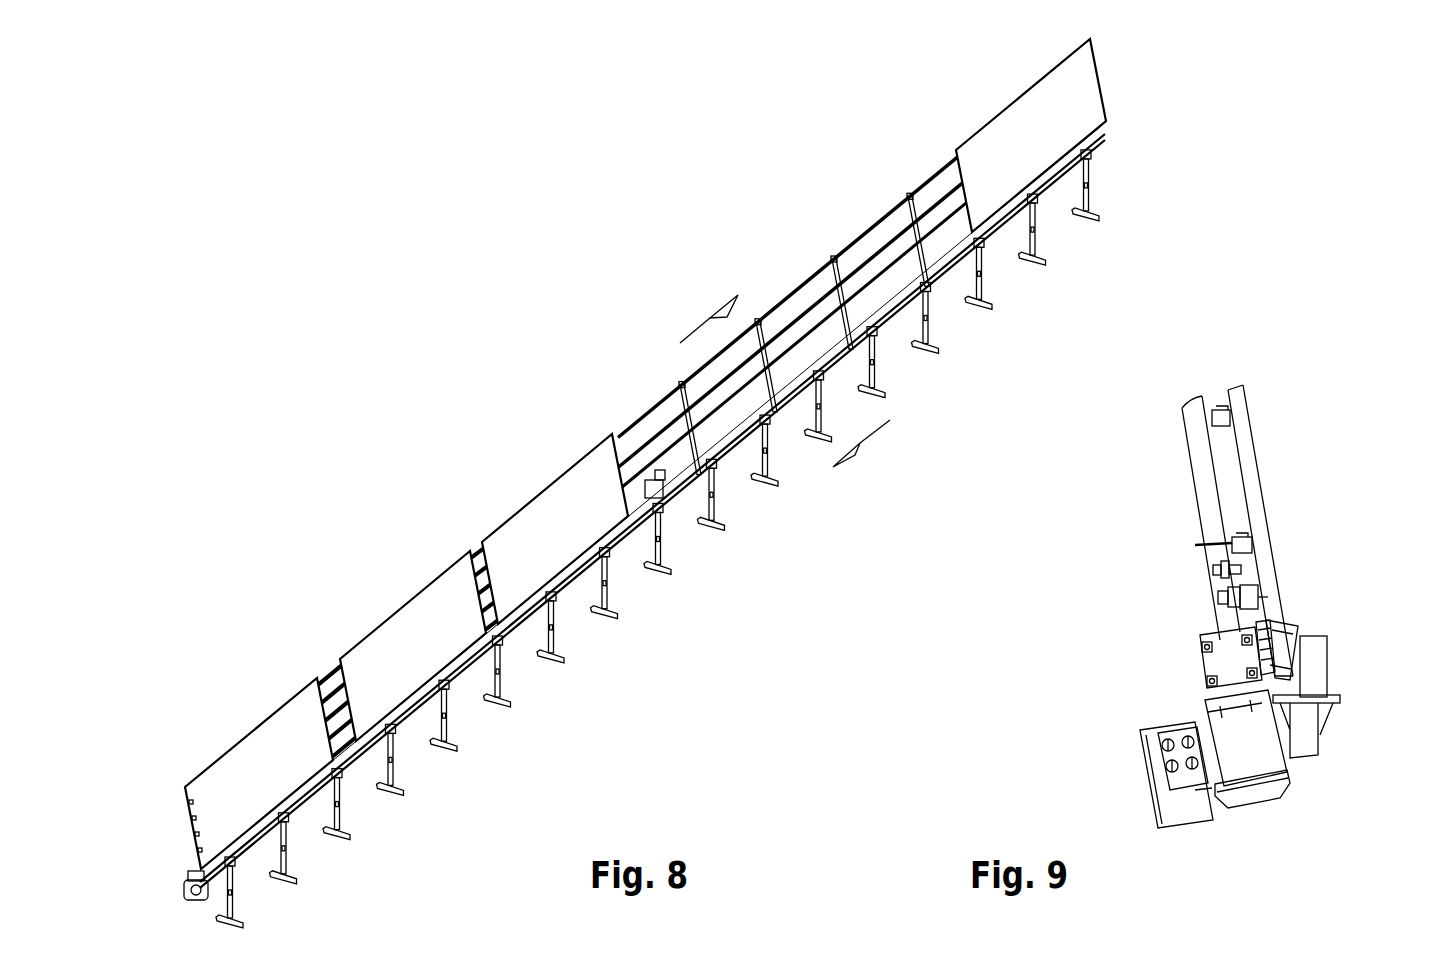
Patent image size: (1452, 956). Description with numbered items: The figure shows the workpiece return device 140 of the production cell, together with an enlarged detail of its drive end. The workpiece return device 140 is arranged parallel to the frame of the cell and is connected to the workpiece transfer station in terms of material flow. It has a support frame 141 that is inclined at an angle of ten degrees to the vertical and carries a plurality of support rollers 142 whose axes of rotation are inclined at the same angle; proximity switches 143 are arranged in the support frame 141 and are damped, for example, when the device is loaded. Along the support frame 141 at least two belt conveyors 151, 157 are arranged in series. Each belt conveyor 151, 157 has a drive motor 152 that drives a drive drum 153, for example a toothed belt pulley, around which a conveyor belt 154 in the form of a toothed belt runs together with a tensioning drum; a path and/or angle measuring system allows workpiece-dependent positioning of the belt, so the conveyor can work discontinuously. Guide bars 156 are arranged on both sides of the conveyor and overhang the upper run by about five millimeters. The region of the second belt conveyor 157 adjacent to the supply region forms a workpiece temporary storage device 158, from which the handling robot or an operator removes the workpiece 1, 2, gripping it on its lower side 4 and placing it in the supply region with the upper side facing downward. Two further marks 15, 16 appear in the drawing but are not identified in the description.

In FIG. 8, the workpiece 1 is at (535, 533).
In FIG. 9, the workpiece 1 is at (1329, 530).
In FIG. 8, the workpiece 2 is at (981, 135).
In FIG. 9, the workpiece 2 is at (1247, 450).
In FIG. 8, the lower side 4 is at (1033, 130).
In FIG. 8, the first direction 15 is at (860, 443).
In FIG. 8, the second direction 16 is at (710, 318).
In FIG. 8, the workpiece return device 140 is at (578, 413).
In FIG. 9, the support frame 141 is at (1208, 508).
In FIG. 9, the support rollers 142 is at (1245, 543).
In FIG. 9, the proximity switches 143 is at (1212, 573).
In FIG. 8, the belt conveyor 151 is at (338, 667).
In FIG. 8, the drive motor 152 is at (188, 895).
In FIG. 9, the drive motor 152 is at (1233, 727).
In FIG. 8, the drive drum 153 is at (188, 880).
In FIG. 9, the drive drum 153 is at (1297, 668).
In FIG. 9, the conveyor belt 154 is at (1280, 642).
In FIG. 9, the guide bars 156 is at (1272, 634).
In FIG. 8, the second belt conveyor 157 is at (850, 322).
In FIG. 8, the workpiece temporary storage device 158 is at (913, 168).